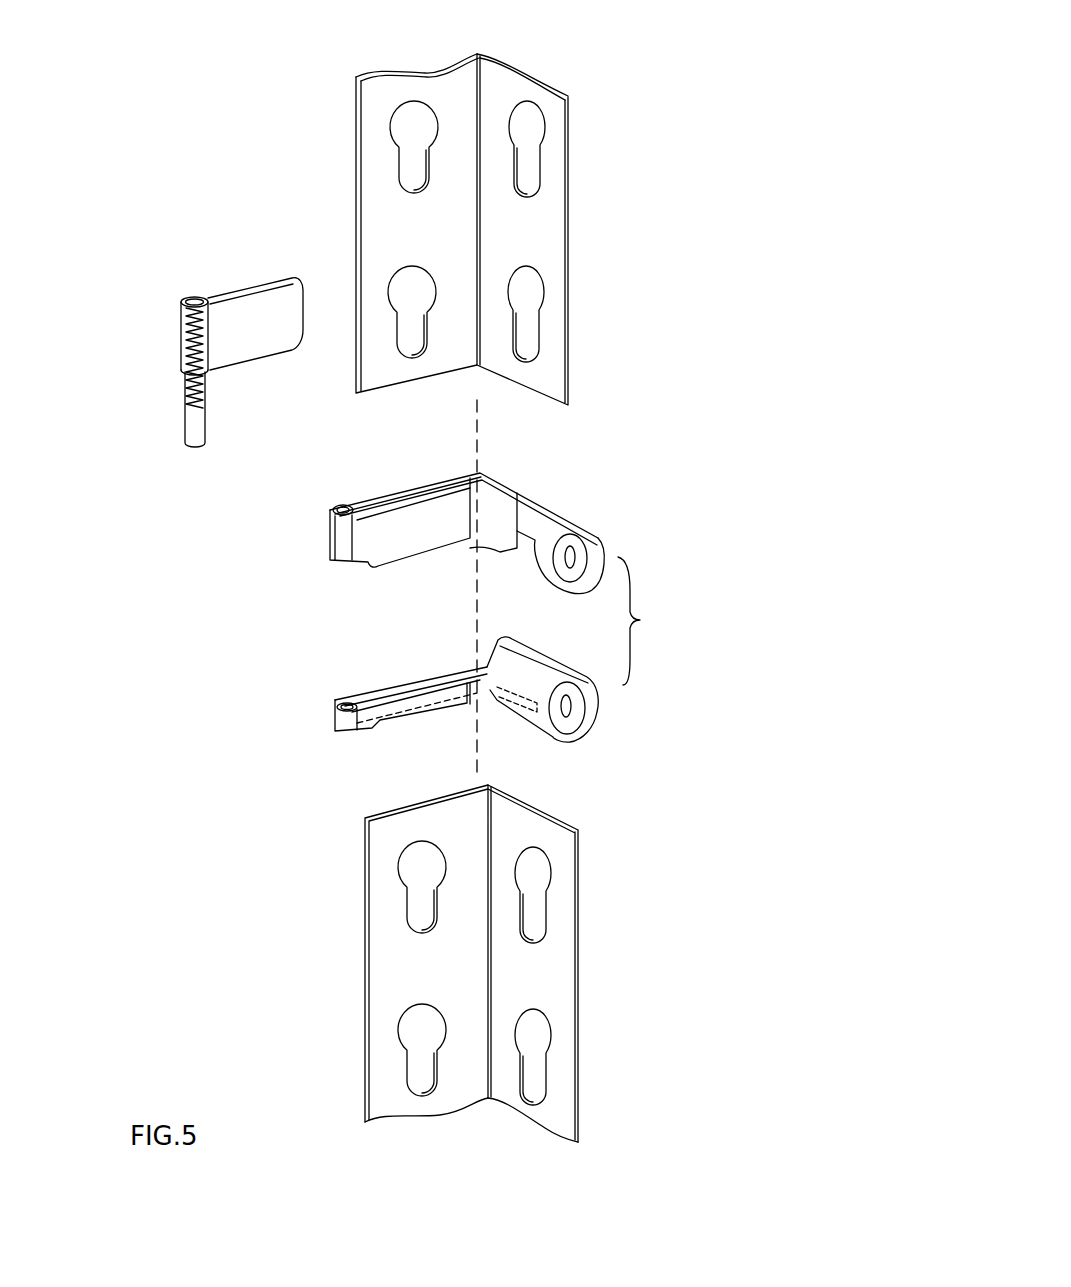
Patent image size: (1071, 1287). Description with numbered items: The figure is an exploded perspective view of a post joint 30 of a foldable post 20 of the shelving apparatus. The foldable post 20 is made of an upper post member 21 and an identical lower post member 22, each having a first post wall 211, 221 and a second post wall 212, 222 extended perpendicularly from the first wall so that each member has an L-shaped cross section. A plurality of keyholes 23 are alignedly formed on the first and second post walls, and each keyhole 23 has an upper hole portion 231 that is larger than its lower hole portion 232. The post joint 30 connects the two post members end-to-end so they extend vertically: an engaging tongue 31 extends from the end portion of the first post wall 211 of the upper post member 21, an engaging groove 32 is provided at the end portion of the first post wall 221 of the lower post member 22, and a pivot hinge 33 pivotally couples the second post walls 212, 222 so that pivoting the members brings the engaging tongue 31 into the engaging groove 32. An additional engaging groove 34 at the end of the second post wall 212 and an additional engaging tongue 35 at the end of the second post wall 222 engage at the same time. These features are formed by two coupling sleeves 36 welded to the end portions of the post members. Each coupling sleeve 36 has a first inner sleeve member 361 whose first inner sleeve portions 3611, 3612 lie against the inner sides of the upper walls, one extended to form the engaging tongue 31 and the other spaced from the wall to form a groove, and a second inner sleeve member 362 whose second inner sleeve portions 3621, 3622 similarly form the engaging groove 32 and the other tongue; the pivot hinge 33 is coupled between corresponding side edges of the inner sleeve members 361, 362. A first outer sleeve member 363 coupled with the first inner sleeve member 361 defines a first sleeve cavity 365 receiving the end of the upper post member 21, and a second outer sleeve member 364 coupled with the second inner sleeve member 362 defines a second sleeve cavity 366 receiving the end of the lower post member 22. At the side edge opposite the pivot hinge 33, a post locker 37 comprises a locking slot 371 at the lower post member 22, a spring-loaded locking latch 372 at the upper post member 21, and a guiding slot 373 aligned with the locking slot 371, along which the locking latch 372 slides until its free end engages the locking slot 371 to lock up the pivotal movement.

The foldable post 20 is at (755, 140).
The upper post member 21 is at (718, 297).
The first post wall 211 is at (387, 228).
The second post wall 212 is at (549, 263).
The lower post member 22 is at (692, 1036).
The first post wall 221 is at (395, 993).
The second post wall 222 is at (552, 998).
The keyhole 23 is at (400, 138).
The upper hole portion 231 is at (527, 137).
The lower hole portion 232 is at (538, 189).
The post joint 30 is at (705, 592).
The engaging tongue 31 is at (392, 567).
The engaging groove 32 is at (380, 693).
The pivot hinge 33 is at (653, 621).
The additional engaging groove 34 is at (525, 487).
The additional engaging tongue 35 is at (513, 657).
The coupling sleeve 36 is at (762, 778).
The first inner sleeve member 361 is at (238, 487).
The first inner sleeve portion 3611 is at (383, 525).
The first inner sleeve portion 3612 is at (502, 513).
The second inner sleeve member 362 is at (500, 763).
The second inner sleeve portion 3621 is at (375, 735).
The second inner sleeve portion 3622 is at (555, 745).
The first outer sleeve member 363 is at (453, 480).
The second outer sleeve member 364 is at (457, 673).
The first sleeve cavity 365 is at (407, 490).
The second sleeve cavity 366 is at (425, 730).
The post locker 37 is at (103, 437).
The locking slot 371 is at (333, 707).
The locking latch 372 is at (197, 427).
The guiding slot 373 is at (334, 512).